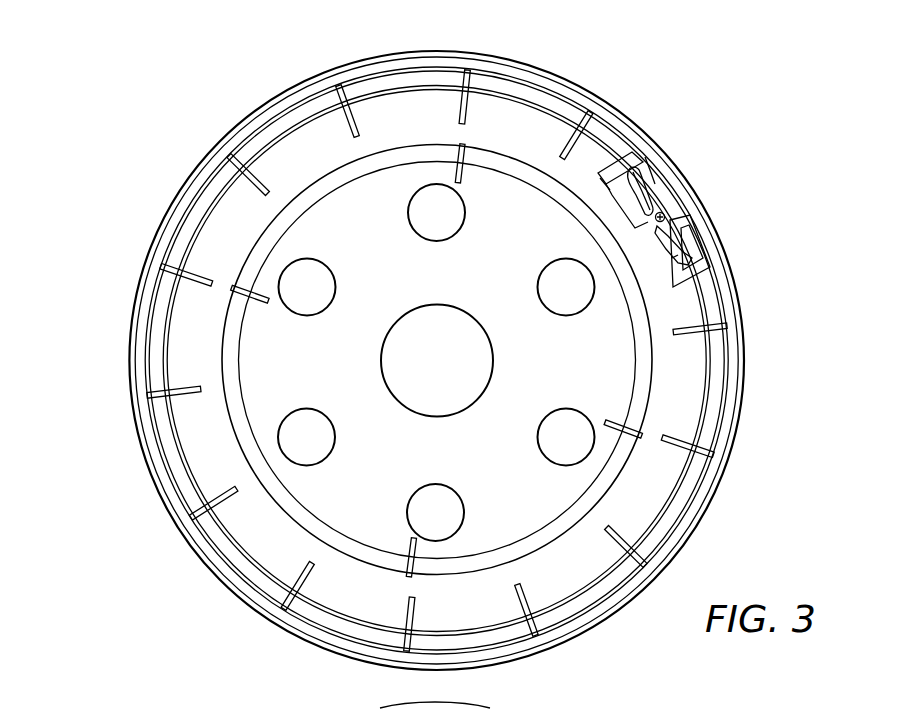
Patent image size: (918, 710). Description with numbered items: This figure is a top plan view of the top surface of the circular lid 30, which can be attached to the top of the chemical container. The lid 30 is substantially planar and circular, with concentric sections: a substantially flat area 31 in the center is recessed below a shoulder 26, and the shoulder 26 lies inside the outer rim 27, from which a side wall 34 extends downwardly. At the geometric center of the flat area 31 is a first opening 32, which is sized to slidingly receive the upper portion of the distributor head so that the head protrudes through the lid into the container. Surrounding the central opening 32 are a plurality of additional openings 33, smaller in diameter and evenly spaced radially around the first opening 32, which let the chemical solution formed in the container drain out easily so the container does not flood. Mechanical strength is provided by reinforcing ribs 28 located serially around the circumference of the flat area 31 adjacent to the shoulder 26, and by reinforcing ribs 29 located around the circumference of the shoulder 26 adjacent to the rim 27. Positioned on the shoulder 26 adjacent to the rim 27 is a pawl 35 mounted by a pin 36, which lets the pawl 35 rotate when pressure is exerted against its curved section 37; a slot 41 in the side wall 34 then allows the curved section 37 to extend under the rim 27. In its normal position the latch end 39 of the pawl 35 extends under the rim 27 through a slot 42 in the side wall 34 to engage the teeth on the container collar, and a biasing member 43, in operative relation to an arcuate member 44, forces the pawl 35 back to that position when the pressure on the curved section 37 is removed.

The lid 30 is at (148, 170).
The shoulder 26 is at (312, 166).
The rim 27 is at (247, 130).
The reinforcing ribs 28 is at (253, 308).
The reinforcing ribs 29 is at (180, 388).
The flat area 31 is at (388, 264).
The first opening 32 is at (492, 373).
The additional openings 33 is at (447, 218).
The side wall 34 is at (150, 470).
The pawl 35 is at (667, 214).
The pin 36 is at (654, 228).
The curved section 37 is at (663, 283).
The latch end 39 is at (645, 152).
The slot 41 is at (694, 247).
The slot 42 is at (647, 174).
The biasing member 43 is at (605, 185).
The arcuate member 44 is at (612, 156).